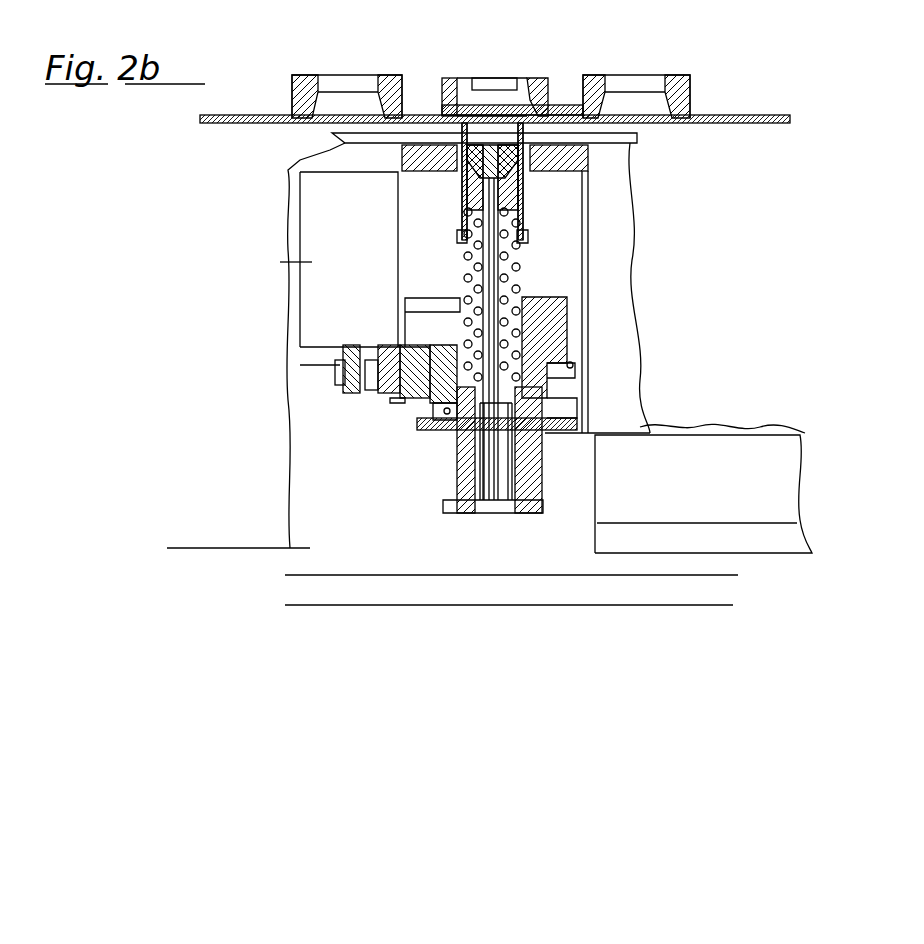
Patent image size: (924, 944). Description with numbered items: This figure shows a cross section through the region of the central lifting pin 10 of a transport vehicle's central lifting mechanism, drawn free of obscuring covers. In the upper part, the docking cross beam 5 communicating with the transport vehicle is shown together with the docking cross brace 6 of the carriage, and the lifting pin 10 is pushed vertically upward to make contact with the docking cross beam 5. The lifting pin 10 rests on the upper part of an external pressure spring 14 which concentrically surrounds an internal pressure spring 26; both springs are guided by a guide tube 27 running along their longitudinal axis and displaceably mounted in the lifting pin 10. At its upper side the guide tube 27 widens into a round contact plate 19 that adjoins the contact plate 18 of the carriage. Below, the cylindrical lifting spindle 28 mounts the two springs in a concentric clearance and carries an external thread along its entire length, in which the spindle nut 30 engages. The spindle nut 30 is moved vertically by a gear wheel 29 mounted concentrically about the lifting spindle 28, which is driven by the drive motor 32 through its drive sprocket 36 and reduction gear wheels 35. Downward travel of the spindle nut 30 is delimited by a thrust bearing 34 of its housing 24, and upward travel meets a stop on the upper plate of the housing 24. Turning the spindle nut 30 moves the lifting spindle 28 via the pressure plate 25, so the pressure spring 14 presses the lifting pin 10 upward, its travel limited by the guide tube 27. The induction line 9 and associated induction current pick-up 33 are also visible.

The docking cross beam 5 is at (740, 117).
The docking cross brace 6 is at (607, 75).
The induction line 9 is at (702, 583).
The central lifting pin 10 is at (517, 197).
The external pressure spring 14 is at (520, 253).
The contact plate 18 is at (637, 144).
The round contact plate 19 is at (575, 171).
The housing 24 is at (417, 420).
The pressure plate 25 is at (567, 303).
The internal pressure spring 26 is at (518, 263).
The guide tube 27 is at (485, 400).
The lifting spindle 28 is at (462, 398).
The gear wheel 29 is at (572, 365).
The spindle nut 30 is at (567, 335).
The drive motor 32 is at (312, 262).
The induction current pick-up 33 is at (732, 533).
The thrust bearing 34 is at (577, 410).
The reduction gear wheels 35 is at (392, 392).
The drive sprocket 36 is at (338, 375).